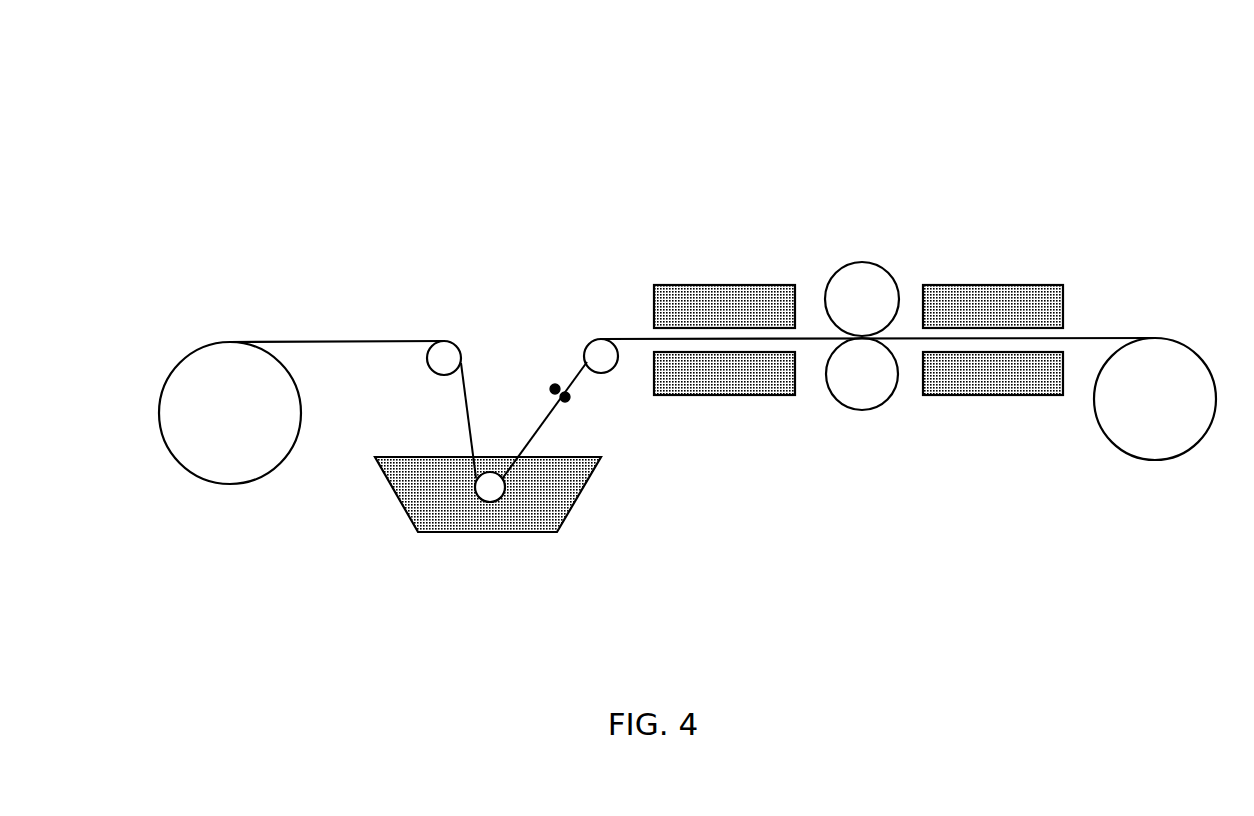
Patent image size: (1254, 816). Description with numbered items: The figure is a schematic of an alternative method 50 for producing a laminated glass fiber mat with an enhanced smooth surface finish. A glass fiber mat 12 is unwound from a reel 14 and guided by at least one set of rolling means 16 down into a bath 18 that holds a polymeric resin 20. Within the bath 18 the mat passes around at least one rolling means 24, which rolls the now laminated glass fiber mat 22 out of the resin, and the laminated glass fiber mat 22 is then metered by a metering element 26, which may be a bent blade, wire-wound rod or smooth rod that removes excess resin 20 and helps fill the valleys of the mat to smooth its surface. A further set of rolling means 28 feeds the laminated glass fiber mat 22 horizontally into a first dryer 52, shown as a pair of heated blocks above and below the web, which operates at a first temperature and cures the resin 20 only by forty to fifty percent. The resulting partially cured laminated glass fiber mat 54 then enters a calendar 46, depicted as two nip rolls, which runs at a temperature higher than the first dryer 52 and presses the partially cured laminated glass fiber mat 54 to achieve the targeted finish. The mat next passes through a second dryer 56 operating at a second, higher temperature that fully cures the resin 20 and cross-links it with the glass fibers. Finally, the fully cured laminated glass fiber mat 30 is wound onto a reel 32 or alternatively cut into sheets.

The glass fiber mat 12 is at (302, 340).
The reel 14 is at (202, 453).
The rolling means 16 is at (452, 350).
The bath 18 is at (558, 527).
The polymeric resin 20 is at (432, 507).
The laminated glass fiber mat 22 is at (572, 371).
The rolling means 24 is at (490, 493).
The metering element 26 is at (573, 398).
The rolling means 28 is at (598, 350).
The fully cured laminated glass fiber mat 30 is at (1083, 336).
The reel 32 is at (1143, 417).
The calendar 46 is at (870, 285).
The method 50 is at (854, 137).
The first dryer 52 is at (740, 297).
The partially cured laminated glass fiber mat 54 is at (808, 340).
The second dryer 56 is at (985, 290).